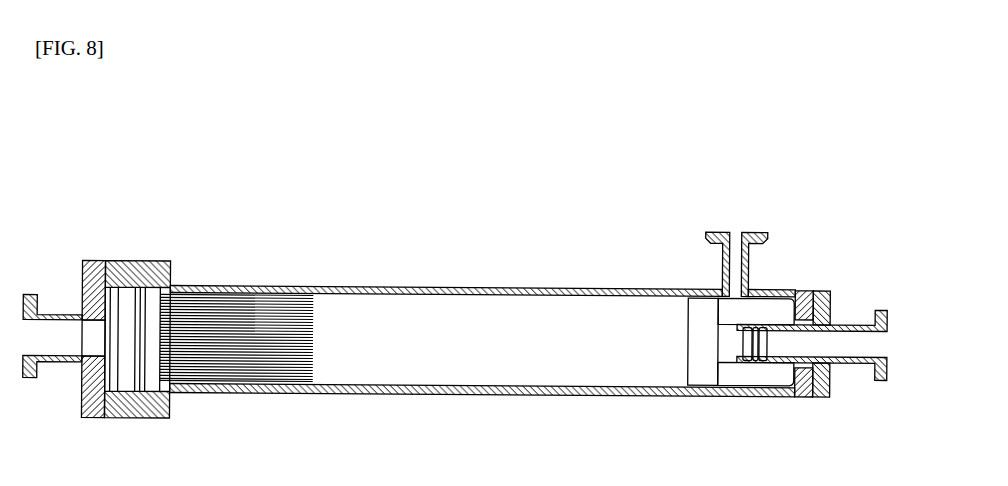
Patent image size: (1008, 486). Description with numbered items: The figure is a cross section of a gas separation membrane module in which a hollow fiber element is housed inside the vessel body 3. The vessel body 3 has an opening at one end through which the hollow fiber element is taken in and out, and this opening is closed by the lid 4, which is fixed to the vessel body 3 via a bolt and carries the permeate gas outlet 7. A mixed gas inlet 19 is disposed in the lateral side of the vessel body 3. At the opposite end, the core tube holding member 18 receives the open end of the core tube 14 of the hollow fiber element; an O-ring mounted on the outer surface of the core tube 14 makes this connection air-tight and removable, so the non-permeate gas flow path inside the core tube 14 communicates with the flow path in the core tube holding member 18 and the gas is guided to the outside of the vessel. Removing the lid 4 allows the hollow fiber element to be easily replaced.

The vessel body 3 is at (370, 283).
The lid 4 is at (91, 269).
The permeate gas outlet 7 is at (59, 342).
The core tube 14 is at (733, 343).
The core tube holding member 18 is at (847, 358).
The mixed gas inlet 19 is at (733, 241).